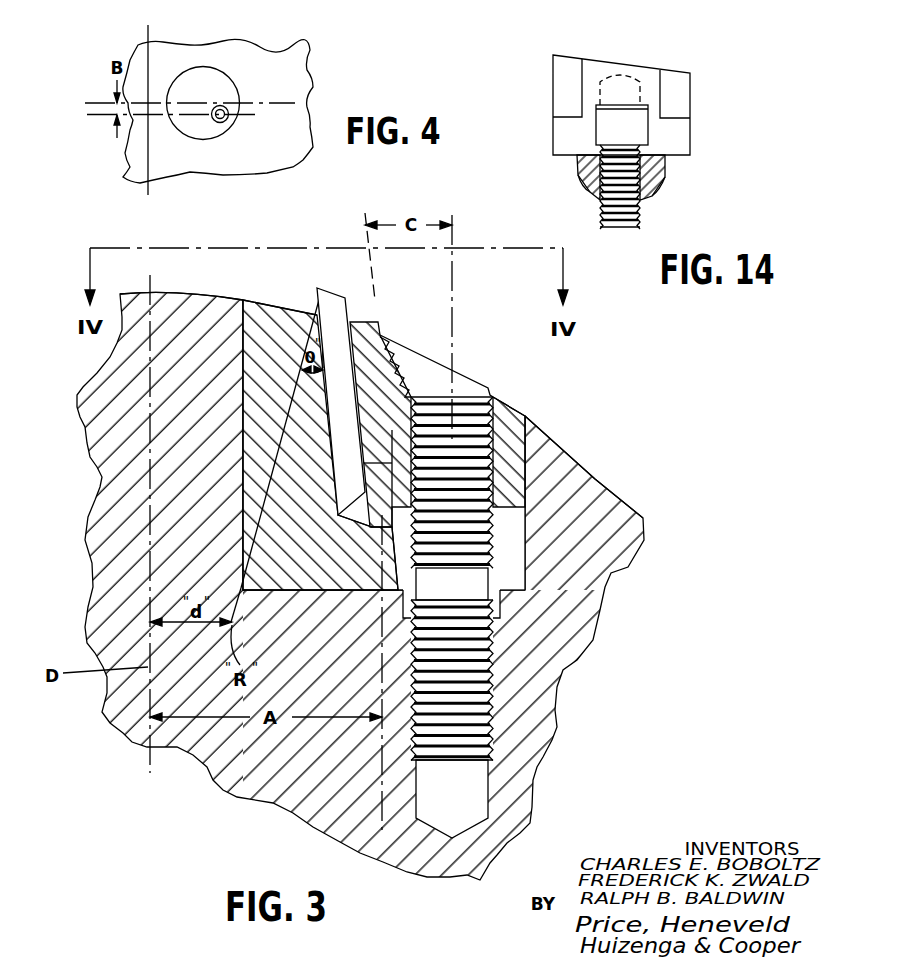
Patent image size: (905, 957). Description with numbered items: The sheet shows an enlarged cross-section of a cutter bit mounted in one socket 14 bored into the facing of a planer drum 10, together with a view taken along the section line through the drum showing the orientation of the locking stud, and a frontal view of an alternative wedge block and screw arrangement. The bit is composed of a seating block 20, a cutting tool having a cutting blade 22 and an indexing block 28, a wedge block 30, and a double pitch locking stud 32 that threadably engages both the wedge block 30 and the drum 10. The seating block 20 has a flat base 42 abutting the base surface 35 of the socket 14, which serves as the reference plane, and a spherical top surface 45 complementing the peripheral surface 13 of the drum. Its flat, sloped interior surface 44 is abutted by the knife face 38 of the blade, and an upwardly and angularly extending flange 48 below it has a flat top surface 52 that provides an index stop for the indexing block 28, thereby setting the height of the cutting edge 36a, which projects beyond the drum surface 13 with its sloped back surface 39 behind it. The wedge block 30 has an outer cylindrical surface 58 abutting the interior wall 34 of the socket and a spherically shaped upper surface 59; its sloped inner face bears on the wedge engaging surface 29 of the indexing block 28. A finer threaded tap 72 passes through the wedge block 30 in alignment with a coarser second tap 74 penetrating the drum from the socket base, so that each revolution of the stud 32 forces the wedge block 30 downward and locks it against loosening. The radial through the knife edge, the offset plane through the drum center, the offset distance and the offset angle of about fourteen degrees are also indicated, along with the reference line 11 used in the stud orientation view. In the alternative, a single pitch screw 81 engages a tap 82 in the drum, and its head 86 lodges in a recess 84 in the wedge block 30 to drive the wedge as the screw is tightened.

In FIG. 14, the drum 10 is at (660, 182).
In FIG. 3, the drum 10 is at (537, 737).
In FIG. 4, the reference line 11 is at (150, 184).
In FIG. 3, the peripheral surface 13 is at (198, 296).
In FIG. 4, the socket 14 is at (237, 73).
In FIG. 3, the socket 14 is at (564, 617).
In FIG. 3, the seating block 20 is at (320, 445).
In FIG. 3, the cutting blade 22 is at (305, 464).
In FIG. 3, the indexing block 28 is at (375, 410).
In FIG. 3, the wedge engaging surface 29 is at (368, 387).
In FIG. 14, the wedge block 30 is at (683, 136).
In FIG. 3, the wedge block 30 is at (398, 367).
In FIG. 3, the double pitch locking stud 32 is at (452, 584).
In FIG. 3, the interior wall 34 is at (252, 433).
In FIG. 3, the base surface 35 is at (357, 583).
In FIG. 3, the cutting edge 36a is at (318, 292).
In FIG. 3, the knife face 38 is at (307, 501).
In FIG. 3, the back surface 39 is at (332, 292).
In FIG. 3, the base 42 is at (263, 589).
In FIG. 3, the interior surface 44 is at (333, 377).
In FIG. 3, the top surface 45 is at (278, 300).
In FIG. 3, the flange 48 is at (374, 507).
In FIG. 3, the top surface of flange 52 is at (373, 347).
In FIG. 3, the outer cylindrical surface 58 is at (527, 478).
In FIG. 3, the upper surface 59 is at (516, 405).
In FIG. 3, the threaded tap 72 is at (488, 388).
In FIG. 3, the second tap 74 is at (495, 648).
In FIG. 14, the screw 81 is at (650, 200).
In FIG. 14, the tap 82 is at (583, 190).
In FIG. 14, the recess 84 is at (625, 105).
In FIG. 14, the head 86 is at (634, 125).